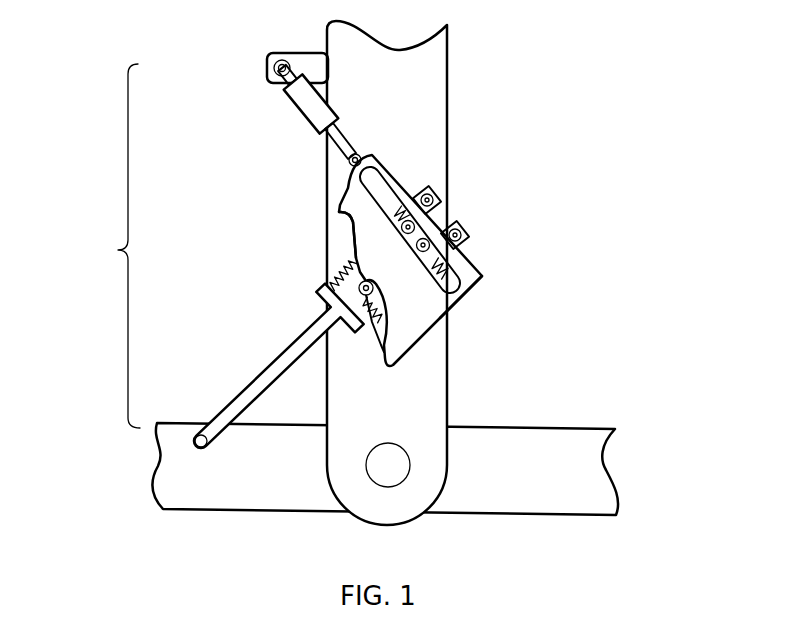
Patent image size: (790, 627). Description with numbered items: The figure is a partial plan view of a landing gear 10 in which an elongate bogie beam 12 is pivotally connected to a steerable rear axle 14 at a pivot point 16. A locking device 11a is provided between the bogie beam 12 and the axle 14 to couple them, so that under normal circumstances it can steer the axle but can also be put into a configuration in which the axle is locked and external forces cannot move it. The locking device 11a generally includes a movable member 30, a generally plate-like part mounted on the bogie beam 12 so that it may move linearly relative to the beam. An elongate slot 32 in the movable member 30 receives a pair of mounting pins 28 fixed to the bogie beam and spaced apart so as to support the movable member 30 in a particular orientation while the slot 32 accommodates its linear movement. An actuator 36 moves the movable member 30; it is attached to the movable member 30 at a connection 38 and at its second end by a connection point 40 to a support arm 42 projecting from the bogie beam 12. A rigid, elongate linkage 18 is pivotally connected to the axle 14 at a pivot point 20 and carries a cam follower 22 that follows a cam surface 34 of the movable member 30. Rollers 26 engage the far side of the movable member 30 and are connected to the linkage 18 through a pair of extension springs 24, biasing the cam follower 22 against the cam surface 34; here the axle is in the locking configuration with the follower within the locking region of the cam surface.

The landing gear 10 is at (629, 84).
The locking device 11a is at (118, 250).
The bogie beam 12 is at (427, 90).
The axle 14 is at (530, 502).
The pivot point 16 is at (388, 462).
The linkage 18 is at (248, 385).
The pivot point 20 is at (210, 451).
The cam follower 22 is at (375, 283).
The extension springs 24 is at (335, 266).
The rollers 26 is at (440, 197).
The mounting pins 28 is at (432, 215).
The movable member 30 is at (463, 270).
The elongate slot 32 is at (382, 188).
The cam surface 34 is at (357, 248).
The actuator 36 is at (296, 113).
The connection 38 is at (346, 163).
The connection point 40 is at (271, 70).
The support arm 42 is at (298, 53).